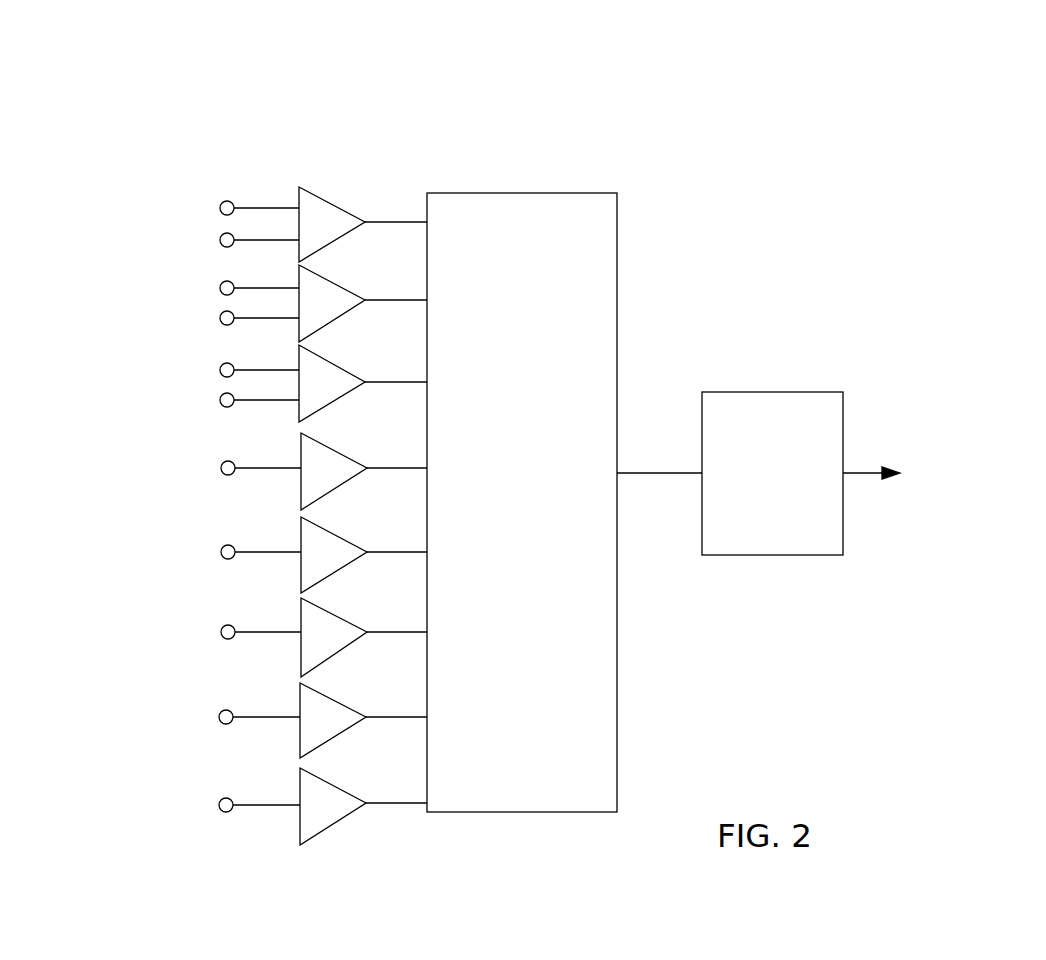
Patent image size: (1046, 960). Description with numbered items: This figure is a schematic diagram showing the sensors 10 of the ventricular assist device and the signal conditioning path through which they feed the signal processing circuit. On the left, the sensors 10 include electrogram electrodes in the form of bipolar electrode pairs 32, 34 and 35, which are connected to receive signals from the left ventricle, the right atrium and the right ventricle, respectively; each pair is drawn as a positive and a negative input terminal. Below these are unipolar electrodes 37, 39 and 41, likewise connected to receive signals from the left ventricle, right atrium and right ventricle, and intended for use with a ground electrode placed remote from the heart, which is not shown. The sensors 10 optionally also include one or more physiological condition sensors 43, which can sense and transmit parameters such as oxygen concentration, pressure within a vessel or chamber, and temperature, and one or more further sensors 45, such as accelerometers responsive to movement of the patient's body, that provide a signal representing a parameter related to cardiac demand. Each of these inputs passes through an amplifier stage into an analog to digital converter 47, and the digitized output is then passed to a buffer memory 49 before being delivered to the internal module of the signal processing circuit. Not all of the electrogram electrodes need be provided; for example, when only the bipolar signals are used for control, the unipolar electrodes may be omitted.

The sensors 10 is at (440, 131).
The bipolar electrode pair 32 is at (143, 221).
The bipolar electrode pair 34 is at (154, 312).
The bipolar electrode pair 35 is at (158, 392).
The unipolar electrode 37 is at (174, 468).
The unipolar electrode 39 is at (167, 554).
The unipolar electrode 41 is at (175, 631).
The physiological condition sensors 43 is at (112, 725).
The further sensors 45 is at (120, 812).
The analog to digital converter 47 is at (510, 193).
The buffer memory 49 is at (726, 403).